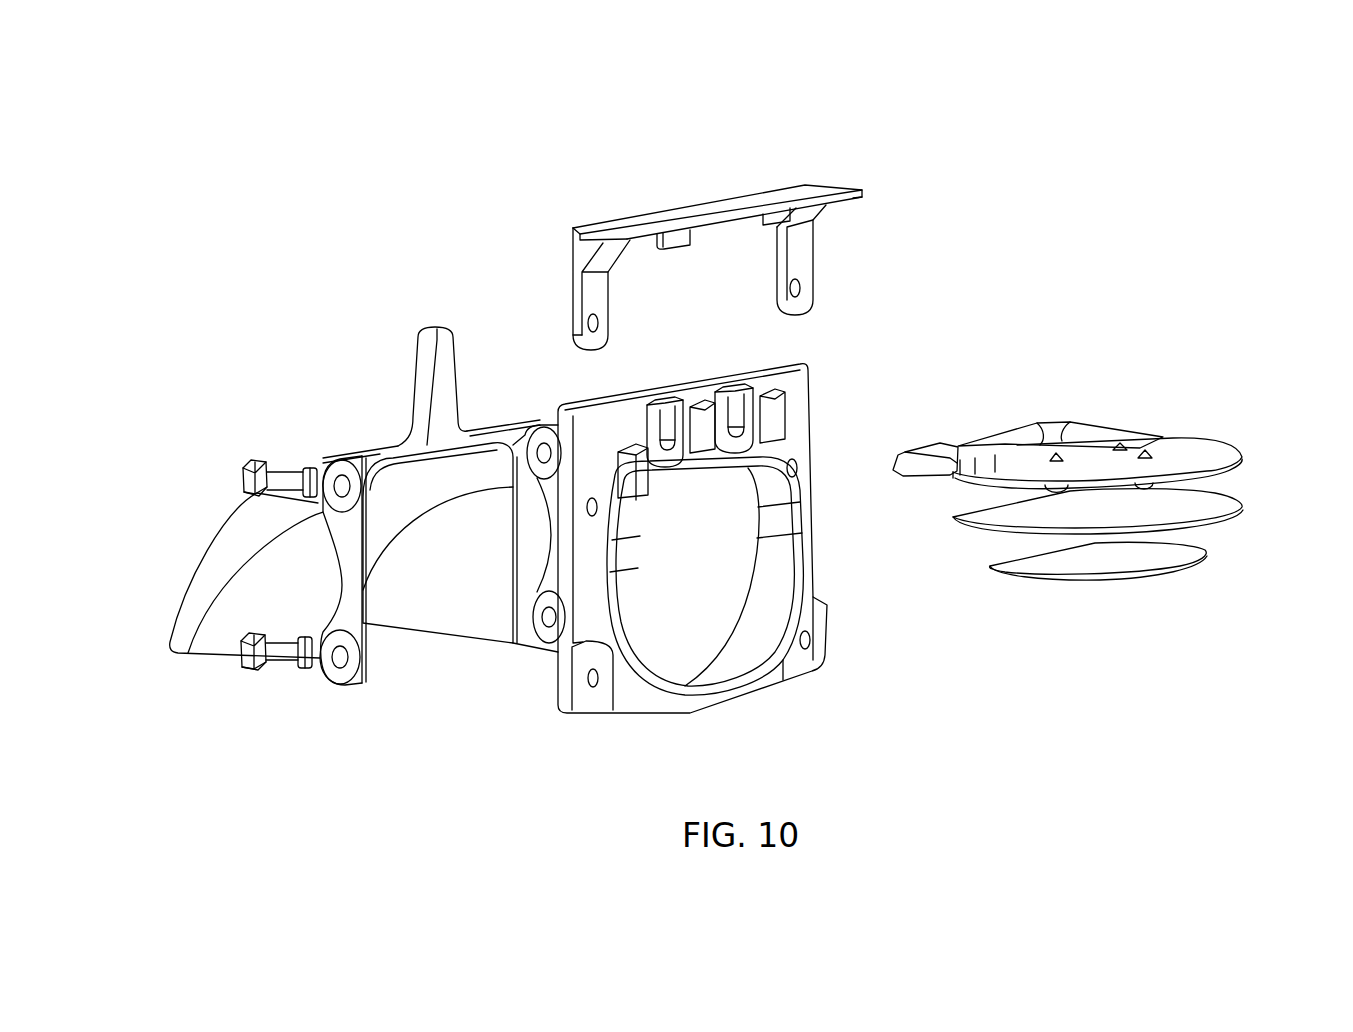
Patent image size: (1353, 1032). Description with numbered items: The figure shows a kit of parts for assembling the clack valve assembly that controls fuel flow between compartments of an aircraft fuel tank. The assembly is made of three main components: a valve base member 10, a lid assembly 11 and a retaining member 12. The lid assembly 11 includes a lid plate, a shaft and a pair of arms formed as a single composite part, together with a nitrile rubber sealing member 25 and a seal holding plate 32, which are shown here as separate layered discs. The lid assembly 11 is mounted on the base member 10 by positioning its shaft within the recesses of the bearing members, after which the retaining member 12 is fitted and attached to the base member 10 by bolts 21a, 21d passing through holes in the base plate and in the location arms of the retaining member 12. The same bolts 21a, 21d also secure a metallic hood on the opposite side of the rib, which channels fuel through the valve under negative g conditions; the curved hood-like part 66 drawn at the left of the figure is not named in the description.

The valve base member 10 is at (777, 692).
The lid assembly 11 is at (1188, 407).
The retaining member 12 is at (854, 165).
The bolt 21a is at (280, 469).
The bolt 21d is at (277, 665).
The nitrile rubber sealing member 25 is at (1244, 507).
The seal holding plate 32 is at (1211, 556).
The spout 66 is at (191, 546).